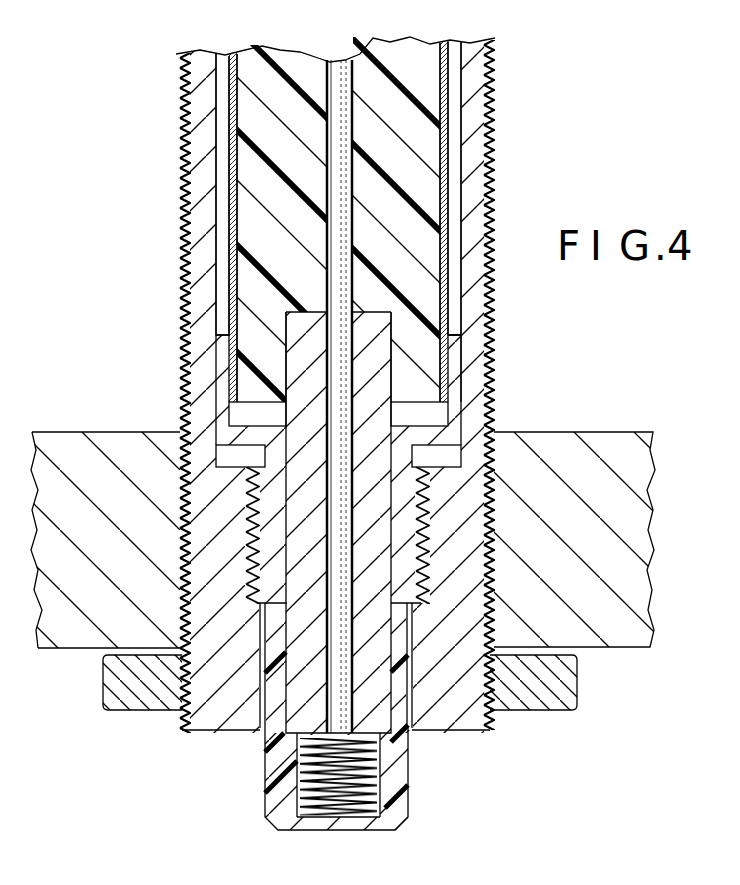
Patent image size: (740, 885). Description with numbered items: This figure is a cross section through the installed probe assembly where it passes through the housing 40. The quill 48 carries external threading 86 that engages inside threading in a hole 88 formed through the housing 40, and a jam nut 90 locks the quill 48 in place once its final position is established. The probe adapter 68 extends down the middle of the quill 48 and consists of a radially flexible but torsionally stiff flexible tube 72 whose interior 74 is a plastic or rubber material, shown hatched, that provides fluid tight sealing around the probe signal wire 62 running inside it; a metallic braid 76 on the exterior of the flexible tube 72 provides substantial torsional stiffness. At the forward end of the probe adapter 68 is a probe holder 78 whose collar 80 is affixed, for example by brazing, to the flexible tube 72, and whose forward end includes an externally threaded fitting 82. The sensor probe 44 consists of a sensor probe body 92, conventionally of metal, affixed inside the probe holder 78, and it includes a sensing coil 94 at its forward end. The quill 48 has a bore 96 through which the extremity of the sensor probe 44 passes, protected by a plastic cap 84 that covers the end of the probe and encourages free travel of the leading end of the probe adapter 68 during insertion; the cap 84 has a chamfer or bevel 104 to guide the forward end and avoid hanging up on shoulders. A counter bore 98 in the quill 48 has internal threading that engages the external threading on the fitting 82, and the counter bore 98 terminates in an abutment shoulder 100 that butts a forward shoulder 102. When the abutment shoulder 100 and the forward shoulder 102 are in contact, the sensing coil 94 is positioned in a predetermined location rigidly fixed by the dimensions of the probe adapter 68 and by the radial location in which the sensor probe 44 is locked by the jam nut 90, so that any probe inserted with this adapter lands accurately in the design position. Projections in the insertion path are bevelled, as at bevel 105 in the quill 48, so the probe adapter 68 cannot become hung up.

The housing 40 is at (612, 435).
The sensor probe 44 is at (352, 742).
The quill 48 is at (470, 145).
The probe signal wire 62 is at (339, 65).
The probe adapter 68 is at (373, 38).
The flexible tube 72 is at (218, 124).
The interior 74 is at (247, 282).
The metallic braid 76 is at (218, 193).
The probe holder 78 is at (417, 525).
The collar 80 is at (453, 377).
The fitting 82 is at (270, 539).
The plastic cap 84 is at (265, 792).
The external threading 86 is at (493, 215).
The hole 88 is at (180, 458).
The jam nut 90 is at (542, 700).
The sensor probe body 92 is at (262, 712).
The sensing coil 94 is at (308, 820).
The bore 96 is at (297, 700).
The counter bore 98 is at (262, 574).
The abutment shoulder 100 is at (246, 606).
The forward shoulder 102 is at (408, 603).
The chamfer or bevel 104 is at (407, 825).
The bevel 105 is at (218, 457).